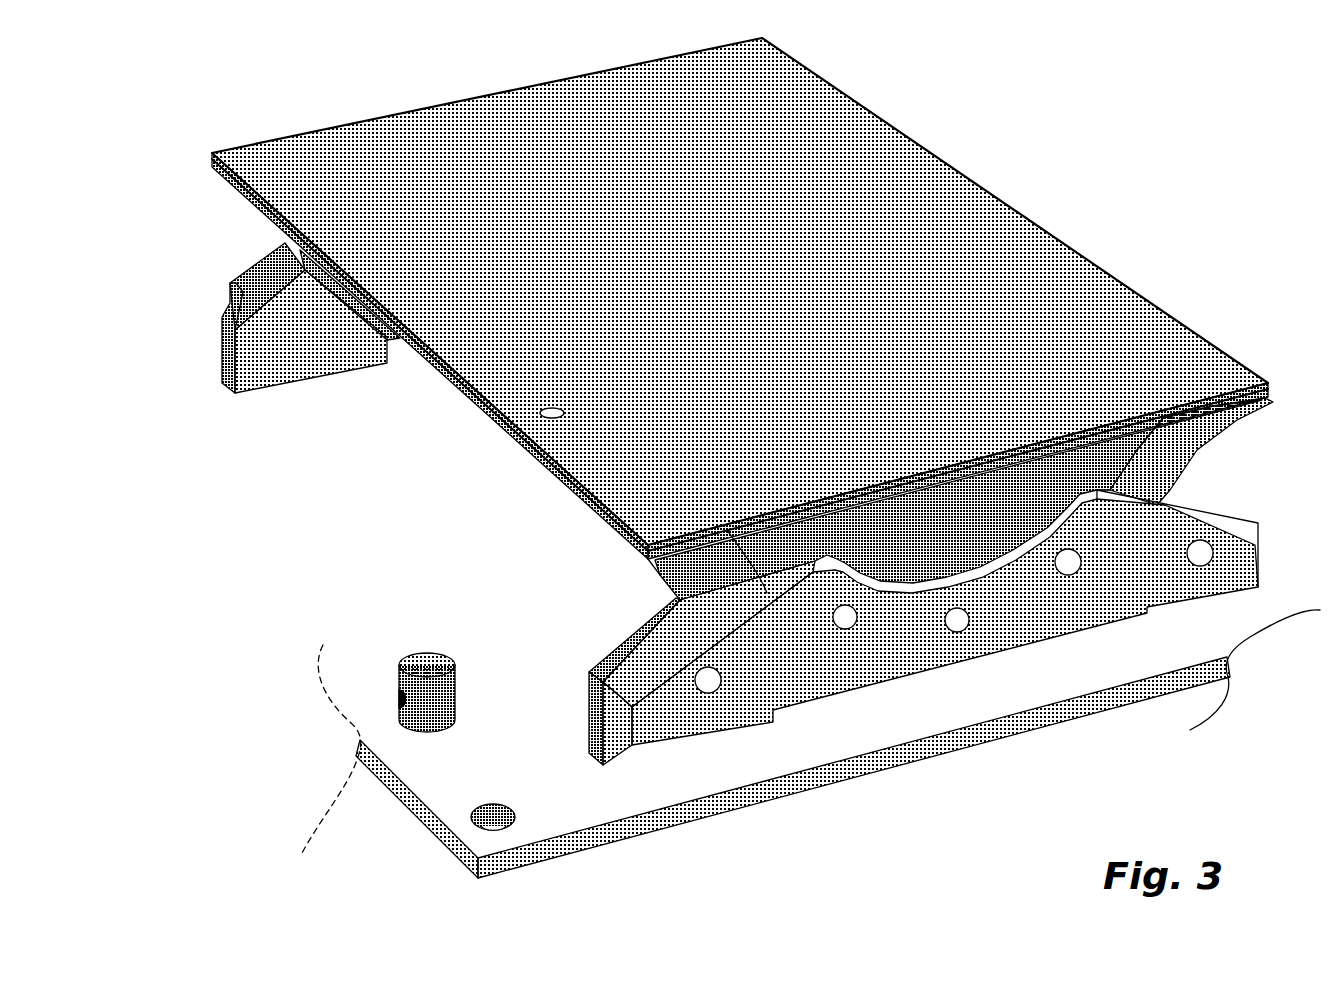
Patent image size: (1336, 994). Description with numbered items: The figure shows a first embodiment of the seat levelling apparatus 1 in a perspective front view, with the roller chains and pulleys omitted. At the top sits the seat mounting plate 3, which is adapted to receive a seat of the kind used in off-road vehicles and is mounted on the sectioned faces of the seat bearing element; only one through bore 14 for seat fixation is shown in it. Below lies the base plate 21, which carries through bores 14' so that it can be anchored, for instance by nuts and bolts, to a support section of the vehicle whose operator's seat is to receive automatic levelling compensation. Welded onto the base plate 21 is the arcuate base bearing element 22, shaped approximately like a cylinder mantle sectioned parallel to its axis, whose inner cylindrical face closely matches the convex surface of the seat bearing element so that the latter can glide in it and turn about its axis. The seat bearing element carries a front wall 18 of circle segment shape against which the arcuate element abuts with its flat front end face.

The seat levelling apparatus 1 is at (1010, 162).
The seat mounting plate 3 is at (487, 347).
The through bore 14 is at (444, 482).
The through bores 14' is at (604, 836).
The front wall 18 is at (840, 525).
The base plate 21 is at (813, 733).
The arcuate base bearing element 22 is at (407, 347).